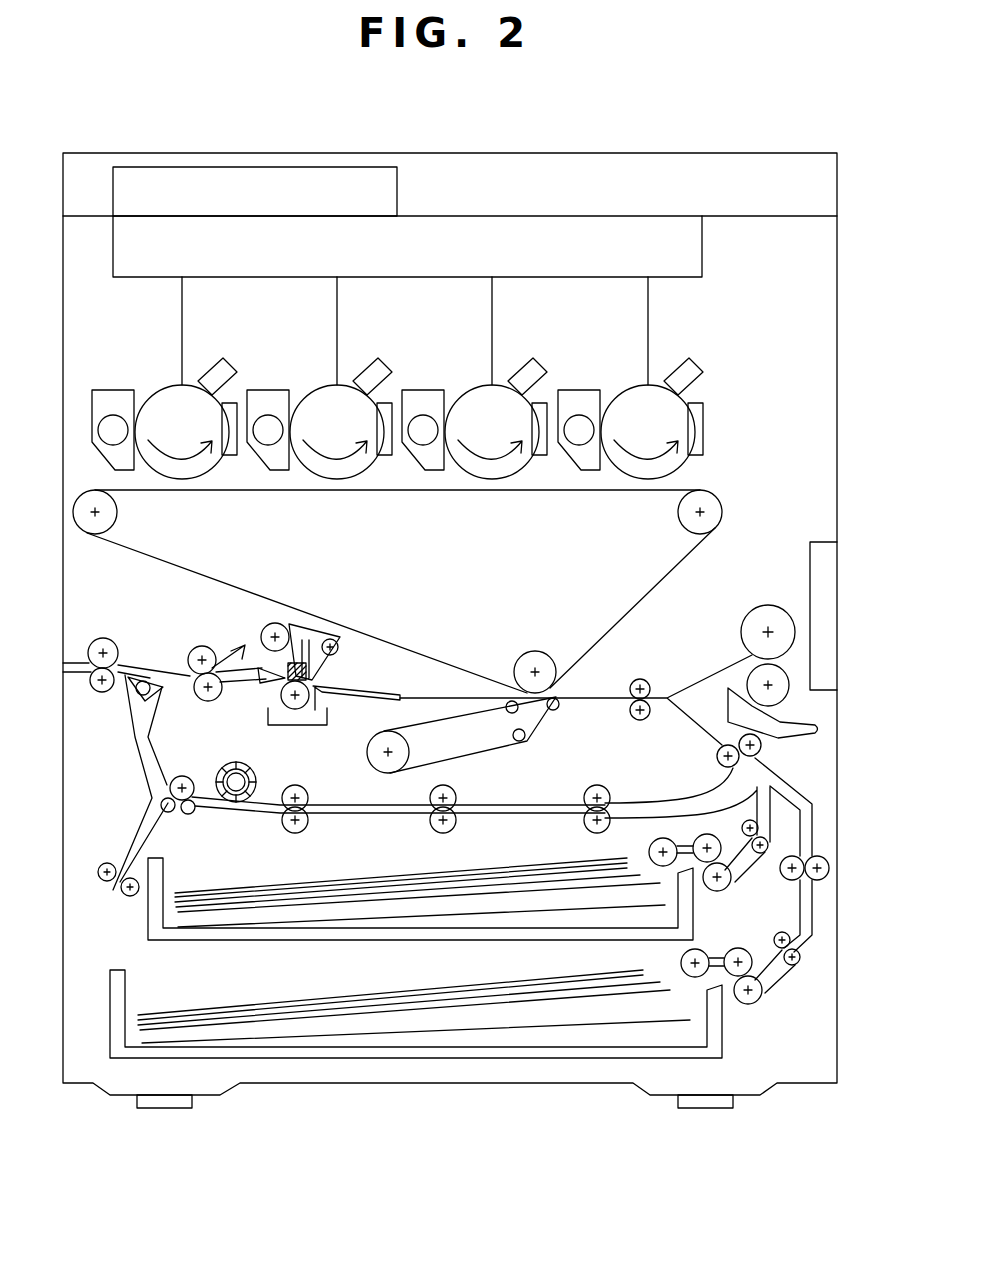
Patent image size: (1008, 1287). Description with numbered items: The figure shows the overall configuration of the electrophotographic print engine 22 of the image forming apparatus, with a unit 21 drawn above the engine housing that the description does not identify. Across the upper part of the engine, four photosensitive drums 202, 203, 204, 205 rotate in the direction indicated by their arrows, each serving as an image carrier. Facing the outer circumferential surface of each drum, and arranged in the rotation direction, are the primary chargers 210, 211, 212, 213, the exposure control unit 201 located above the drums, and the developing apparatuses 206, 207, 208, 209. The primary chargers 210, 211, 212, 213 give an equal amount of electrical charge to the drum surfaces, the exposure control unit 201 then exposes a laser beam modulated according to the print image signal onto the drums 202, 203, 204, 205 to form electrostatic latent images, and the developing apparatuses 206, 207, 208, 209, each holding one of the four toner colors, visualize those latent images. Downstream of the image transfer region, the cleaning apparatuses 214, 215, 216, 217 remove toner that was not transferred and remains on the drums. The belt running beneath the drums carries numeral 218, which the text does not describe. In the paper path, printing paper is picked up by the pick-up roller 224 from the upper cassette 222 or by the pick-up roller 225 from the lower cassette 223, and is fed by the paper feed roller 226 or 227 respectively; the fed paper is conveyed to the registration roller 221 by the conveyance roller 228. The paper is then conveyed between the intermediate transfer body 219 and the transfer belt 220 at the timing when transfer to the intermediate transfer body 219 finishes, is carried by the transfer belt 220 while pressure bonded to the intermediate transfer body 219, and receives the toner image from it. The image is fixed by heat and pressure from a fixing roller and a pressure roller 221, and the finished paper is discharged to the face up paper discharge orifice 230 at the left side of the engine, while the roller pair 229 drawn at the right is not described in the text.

The image reading unit 21 is at (323, 172).
The print engine 22 is at (840, 264).
The exposure control unit 201 is at (552, 226).
The photosensitive drum 202 is at (182, 432).
The photosensitive drum 203 is at (337, 432).
The photosensitive drum 204 is at (492, 432).
The photosensitive drum 205 is at (648, 432).
The developing apparatus 206 is at (113, 400).
The developing apparatus 207 is at (268, 400).
The developing apparatus 208 is at (424, 400).
The developing apparatus 209 is at (587, 400).
The primary charger 210 is at (210, 358).
The primary charger 211 is at (365, 358).
The primary charger 212 is at (520, 358).
The primary charger 213 is at (676, 358).
The cleaning apparatus 214 is at (233, 458).
The cleaning apparatus 215 is at (389, 458).
The cleaning apparatus 216 is at (544, 458).
The cleaning apparatus 217 is at (705, 402).
The intermediate transfer belt 218 is at (714, 497).
The intermediate transfer body 219 is at (537, 651).
The transfer belt 220 is at (366, 752).
The registration roller 221 is at (262, 633).
The upper cassette 222 is at (270, 878).
The lower cassette 223 is at (270, 998).
The pick-up roller 224 is at (648, 852).
The pick-up roller 225 is at (680, 964).
The paper feed roller 226 is at (703, 832).
The paper feed roller 227 is at (741, 948).
The conveyance roller 228 is at (717, 757).
The discharge roller 229 is at (768, 605).
The face up paper discharge orifice 230 is at (75, 650).